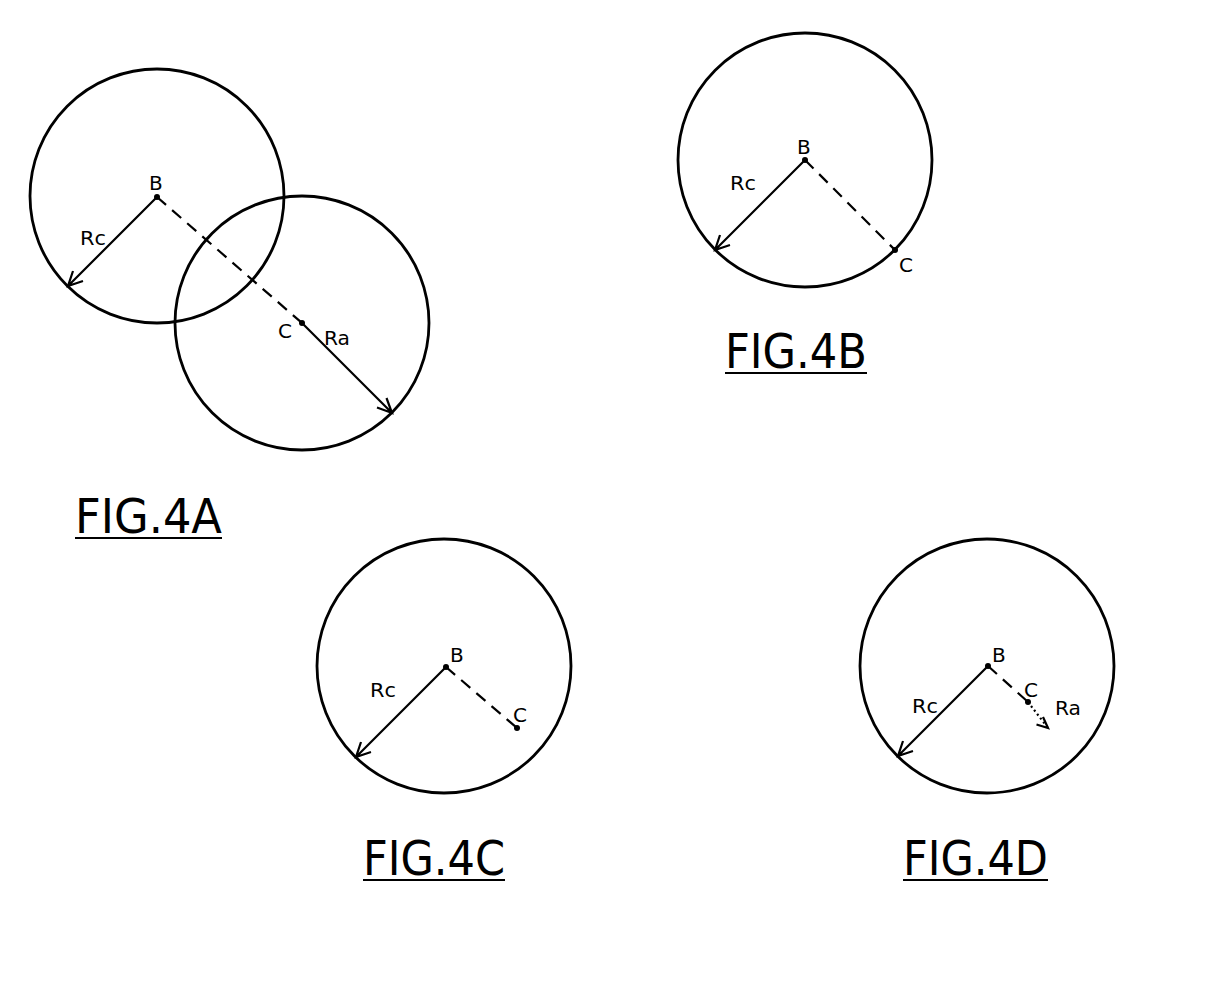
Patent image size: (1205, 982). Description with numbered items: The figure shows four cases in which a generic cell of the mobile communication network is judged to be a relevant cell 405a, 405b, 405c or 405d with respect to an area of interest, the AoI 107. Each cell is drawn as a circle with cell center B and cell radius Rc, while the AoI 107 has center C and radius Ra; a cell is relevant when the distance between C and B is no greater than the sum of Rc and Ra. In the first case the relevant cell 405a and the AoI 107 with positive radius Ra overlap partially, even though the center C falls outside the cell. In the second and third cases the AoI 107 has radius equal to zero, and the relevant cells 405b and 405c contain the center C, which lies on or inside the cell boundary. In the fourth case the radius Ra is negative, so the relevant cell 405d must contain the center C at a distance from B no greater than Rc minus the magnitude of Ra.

In FIG. 4A, the relevant cell 405a is at (265, 122).
In FIG. 4B, the relevant cell 405b is at (907, 115).
In FIG. 4C, the relevant cell 405c is at (480, 542).
In FIG. 4D, the relevant cell 405d is at (1053, 558).
In FIG. 4A, the AoI 107 is at (393, 230).
In FIG. 4B, the AoI 107 is at (902, 247).
In FIG. 4C, the AoI 107 is at (522, 729).
In FIG. 4D, the AoI 107 is at (1026, 704).